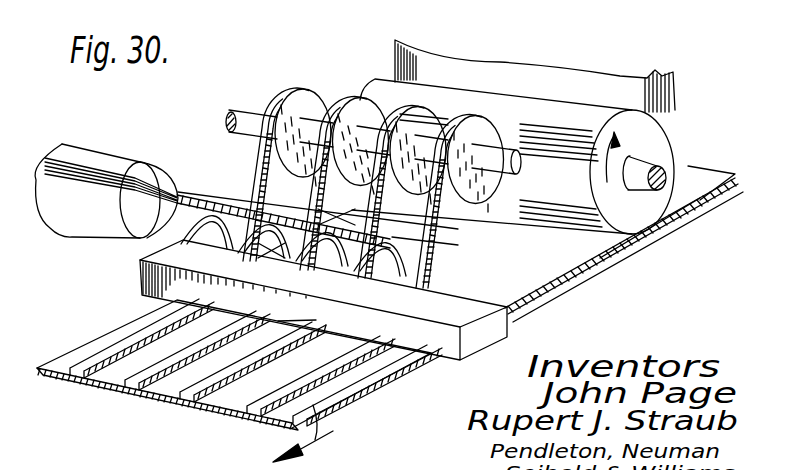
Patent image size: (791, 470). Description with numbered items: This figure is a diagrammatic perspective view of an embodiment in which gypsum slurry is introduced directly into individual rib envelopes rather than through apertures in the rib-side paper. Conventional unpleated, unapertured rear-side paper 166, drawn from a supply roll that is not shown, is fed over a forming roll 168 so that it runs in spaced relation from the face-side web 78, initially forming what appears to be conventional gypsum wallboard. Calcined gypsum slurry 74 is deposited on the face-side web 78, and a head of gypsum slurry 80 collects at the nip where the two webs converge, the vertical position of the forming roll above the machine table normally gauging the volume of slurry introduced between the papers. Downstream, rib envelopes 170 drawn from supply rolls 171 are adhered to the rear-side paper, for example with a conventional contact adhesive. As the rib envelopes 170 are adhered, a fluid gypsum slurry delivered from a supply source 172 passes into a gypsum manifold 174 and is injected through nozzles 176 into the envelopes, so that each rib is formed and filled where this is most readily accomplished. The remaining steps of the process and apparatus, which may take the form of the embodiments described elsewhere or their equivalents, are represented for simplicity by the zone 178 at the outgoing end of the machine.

The calcined gypsum slurry 74 is at (600, 266).
The face-side web 78 is at (627, 248).
The head of gypsum slurry 80 is at (678, 172).
The rear-side paper 166 is at (626, 82).
The forming roll 168 is at (655, 205).
The rib envelopes 170 is at (440, 233).
The supply rolls 171 is at (331, 104).
The supply source 172 is at (66, 214).
The gypsum manifold 174 is at (232, 204).
The nozzles 176 is at (348, 295).
The zone 178 is at (323, 300).